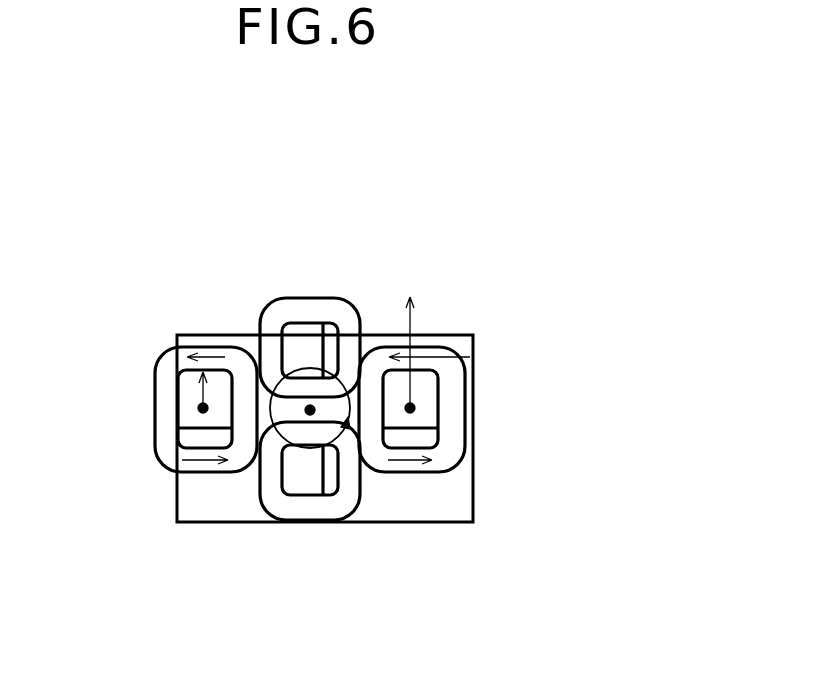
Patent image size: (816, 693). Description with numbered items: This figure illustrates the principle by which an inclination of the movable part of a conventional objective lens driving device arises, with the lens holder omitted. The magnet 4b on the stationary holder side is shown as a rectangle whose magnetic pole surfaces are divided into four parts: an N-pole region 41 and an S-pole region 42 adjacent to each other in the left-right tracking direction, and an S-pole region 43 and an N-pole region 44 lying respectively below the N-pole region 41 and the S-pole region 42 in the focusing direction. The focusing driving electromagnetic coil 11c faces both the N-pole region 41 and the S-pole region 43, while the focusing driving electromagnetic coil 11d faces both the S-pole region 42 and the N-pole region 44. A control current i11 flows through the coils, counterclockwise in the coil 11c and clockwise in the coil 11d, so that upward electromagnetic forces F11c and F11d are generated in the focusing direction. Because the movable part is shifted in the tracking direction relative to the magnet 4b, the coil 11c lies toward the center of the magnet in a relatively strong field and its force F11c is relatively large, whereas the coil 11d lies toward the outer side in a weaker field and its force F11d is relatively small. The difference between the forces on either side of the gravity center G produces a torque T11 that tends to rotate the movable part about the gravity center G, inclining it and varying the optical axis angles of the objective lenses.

The magnet 4b is at (371, 414).
The N-pole region 41 is at (450, 340).
The S-pole region 42 is at (197, 333).
The S-pole region 43 is at (433, 503).
The N-pole region 44 is at (197, 500).
The focusing driving electromagnetic coil 11c is at (450, 412).
The focusing driving electromagnetic coil 11d is at (165, 410).
The current i11 is at (188, 357).
The electromagnetic force F11c is at (410, 297).
The electromagnetic force F11d is at (203, 372).
The torque T11 is at (313, 370).
The gravity center G is at (309, 415).